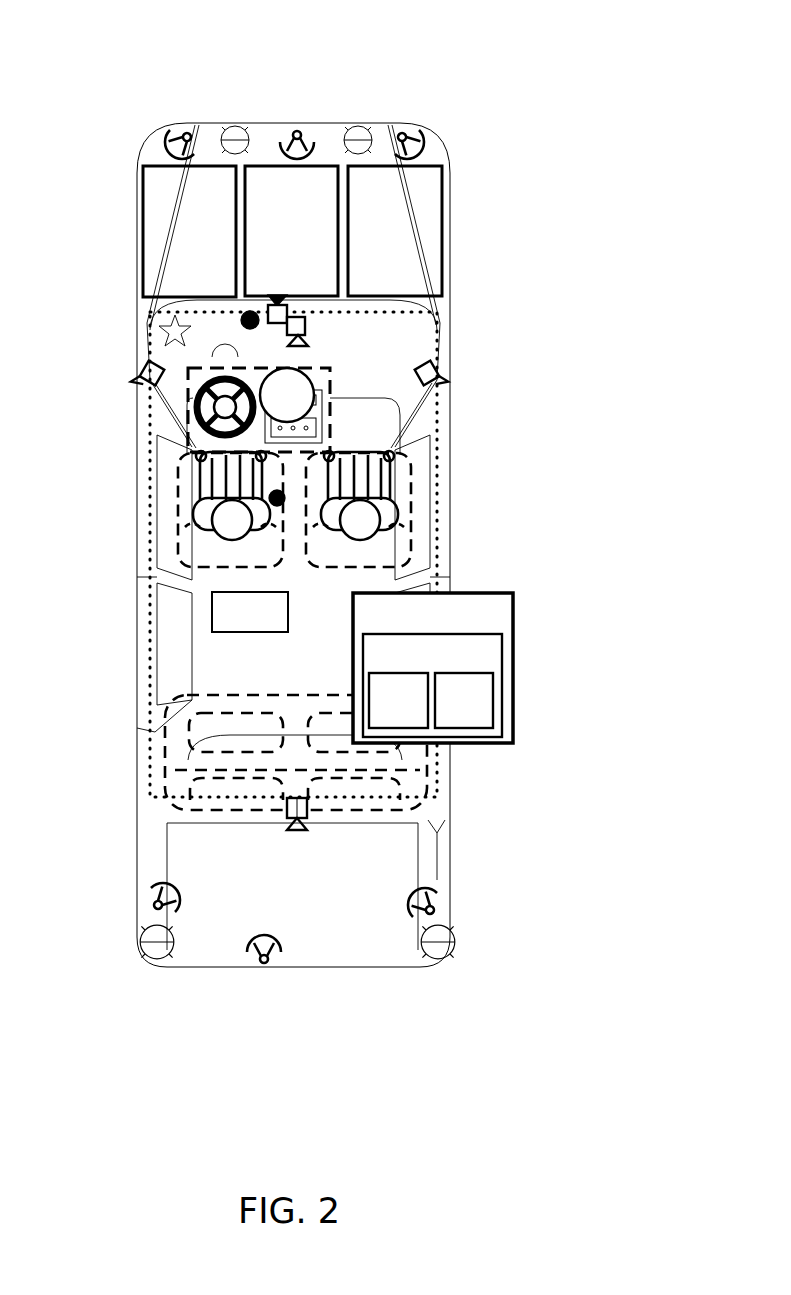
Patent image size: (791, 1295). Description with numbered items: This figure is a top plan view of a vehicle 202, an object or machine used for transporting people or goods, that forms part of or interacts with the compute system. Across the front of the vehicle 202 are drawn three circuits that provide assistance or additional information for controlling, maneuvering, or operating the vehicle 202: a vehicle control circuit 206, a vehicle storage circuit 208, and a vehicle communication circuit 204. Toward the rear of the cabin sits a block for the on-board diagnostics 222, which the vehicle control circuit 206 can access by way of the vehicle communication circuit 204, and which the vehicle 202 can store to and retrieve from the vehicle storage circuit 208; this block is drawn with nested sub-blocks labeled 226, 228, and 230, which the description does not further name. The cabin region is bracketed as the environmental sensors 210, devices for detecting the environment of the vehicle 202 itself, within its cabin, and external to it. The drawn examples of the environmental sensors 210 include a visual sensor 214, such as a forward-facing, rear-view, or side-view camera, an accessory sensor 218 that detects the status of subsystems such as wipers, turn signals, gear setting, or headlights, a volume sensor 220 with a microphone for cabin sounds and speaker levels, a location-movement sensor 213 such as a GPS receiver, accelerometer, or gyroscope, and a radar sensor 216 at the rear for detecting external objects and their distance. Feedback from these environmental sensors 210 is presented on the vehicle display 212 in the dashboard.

The vehicle 202 is at (222, 72).
The vehicle communication circuit 204 is at (372, 287).
The vehicle control circuit 206 is at (167, 287).
The vehicle storage circuit 208 is at (269, 287).
The environmental sensors 210 is at (128, 293).
The vehicle display 212 is at (288, 396).
The location-movement sensor 213 is at (231, 624).
The visual sensor 214 is at (307, 322).
The radar sensor 216 is at (165, 890).
The accessory sensor 218 is at (250, 321).
The volume sensor 220 is at (233, 357).
The on-board diagnostics 222 is at (483, 627).
The OBD device 226 is at (412, 671).
The module 228 is at (379, 714).
The module 230 is at (444, 714).